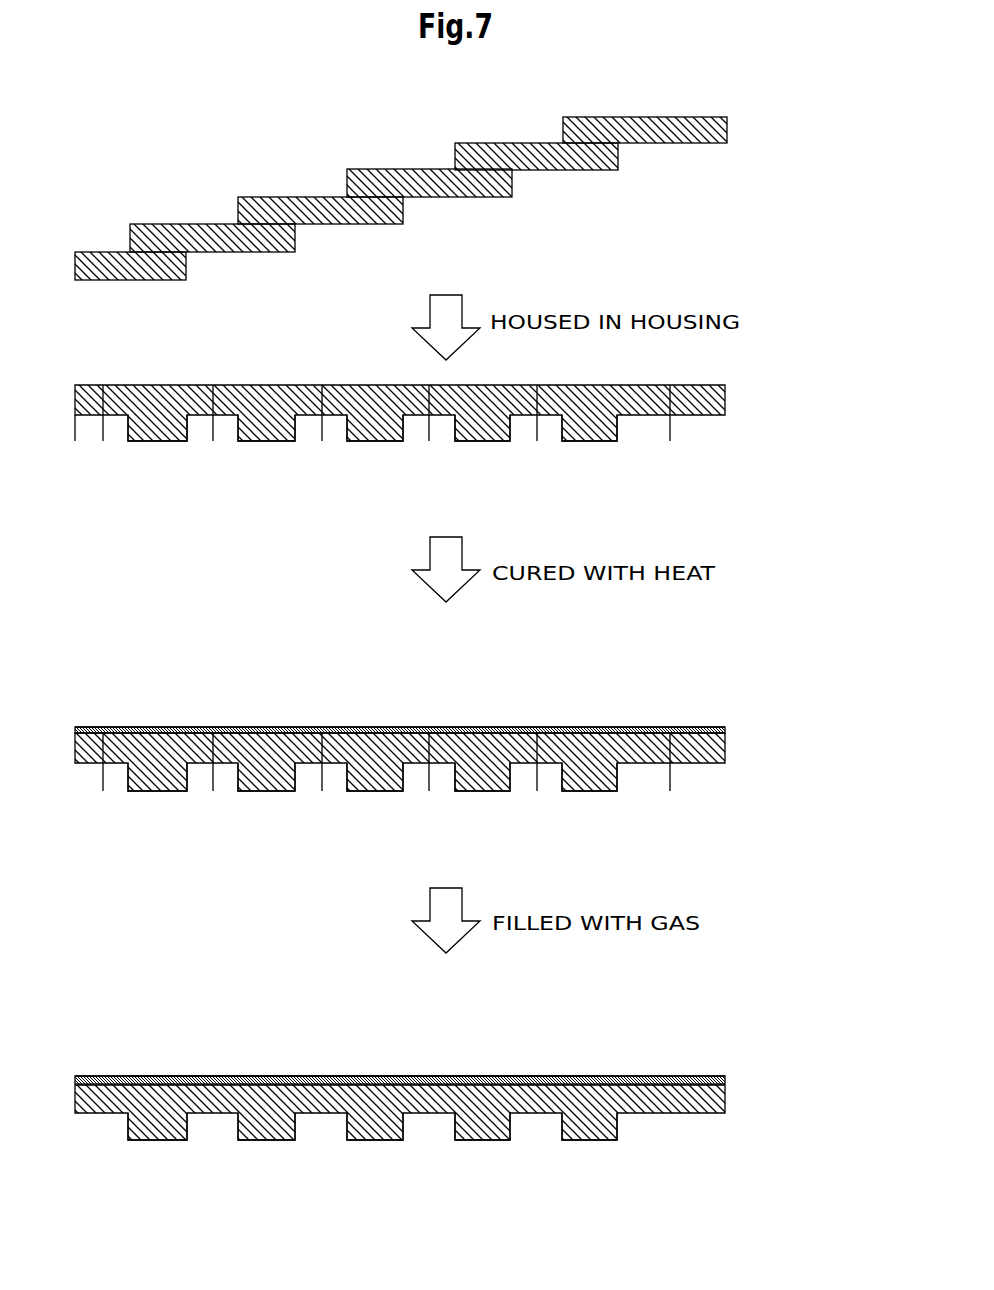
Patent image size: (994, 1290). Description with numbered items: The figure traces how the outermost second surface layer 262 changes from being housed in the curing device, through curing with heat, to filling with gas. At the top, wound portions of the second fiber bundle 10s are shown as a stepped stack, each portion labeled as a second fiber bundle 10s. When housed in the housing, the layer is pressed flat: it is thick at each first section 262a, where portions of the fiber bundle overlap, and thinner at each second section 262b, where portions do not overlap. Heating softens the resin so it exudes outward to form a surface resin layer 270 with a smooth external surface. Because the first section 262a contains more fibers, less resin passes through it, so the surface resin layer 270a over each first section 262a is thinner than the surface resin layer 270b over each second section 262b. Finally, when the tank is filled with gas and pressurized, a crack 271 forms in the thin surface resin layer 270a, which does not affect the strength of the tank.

The second fiber bundle 10s is at (103, 252).
The second surface layer 262 is at (737, 117).
The first section 262a is at (165, 447).
The second section 262b is at (113, 421).
The surface resin layer 270 is at (684, 727).
The surface resin layer 270a is at (165, 725).
The surface resin layer 270b is at (103, 726).
The crack 271 is at (138, 1072).